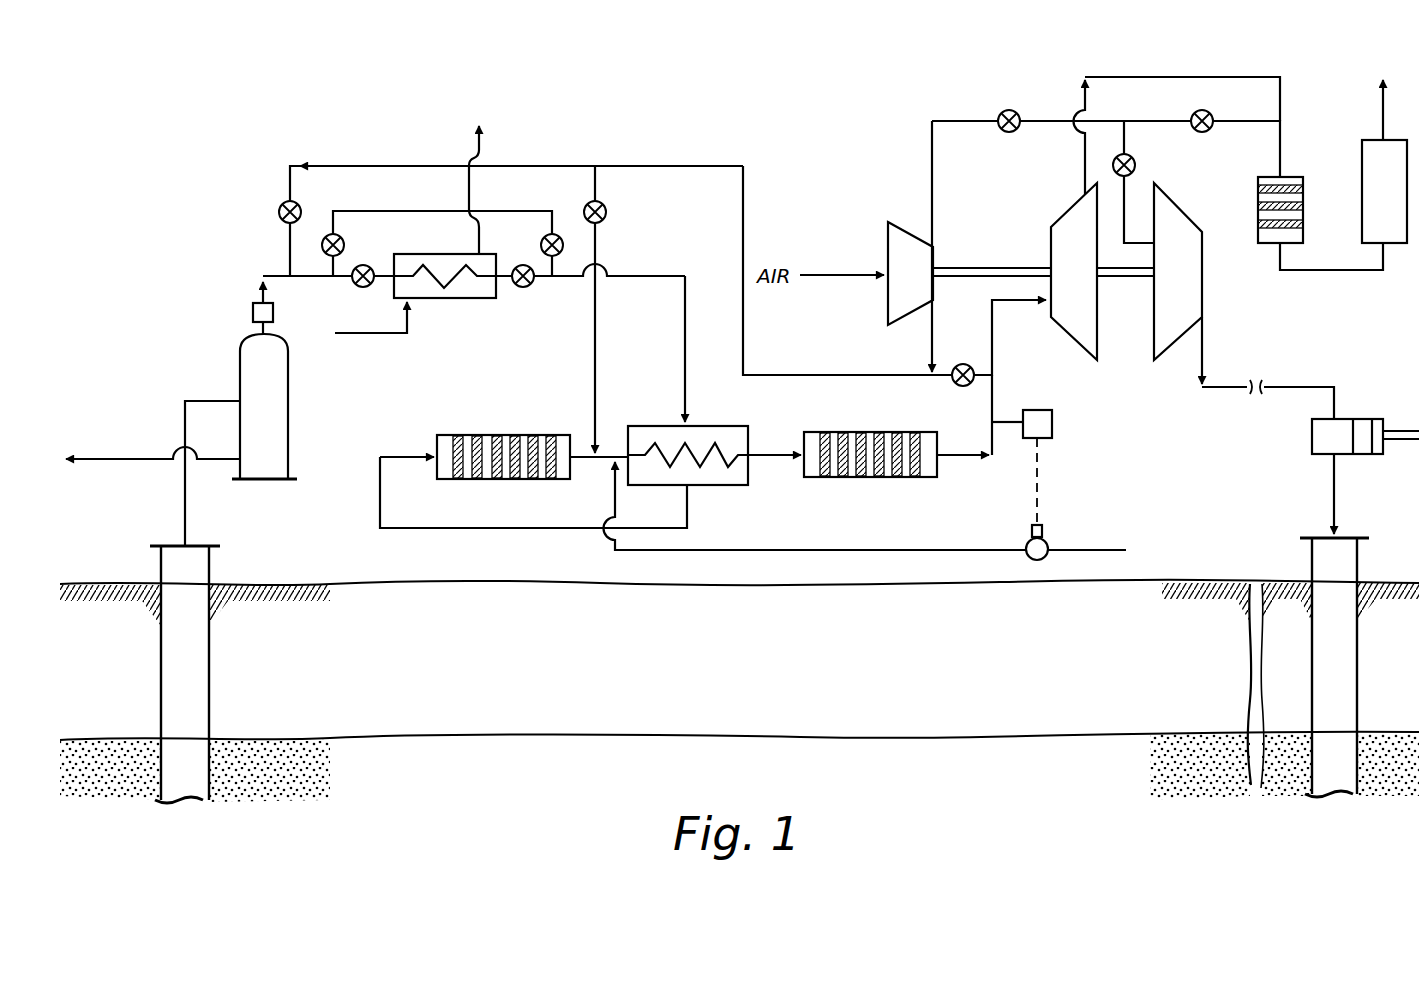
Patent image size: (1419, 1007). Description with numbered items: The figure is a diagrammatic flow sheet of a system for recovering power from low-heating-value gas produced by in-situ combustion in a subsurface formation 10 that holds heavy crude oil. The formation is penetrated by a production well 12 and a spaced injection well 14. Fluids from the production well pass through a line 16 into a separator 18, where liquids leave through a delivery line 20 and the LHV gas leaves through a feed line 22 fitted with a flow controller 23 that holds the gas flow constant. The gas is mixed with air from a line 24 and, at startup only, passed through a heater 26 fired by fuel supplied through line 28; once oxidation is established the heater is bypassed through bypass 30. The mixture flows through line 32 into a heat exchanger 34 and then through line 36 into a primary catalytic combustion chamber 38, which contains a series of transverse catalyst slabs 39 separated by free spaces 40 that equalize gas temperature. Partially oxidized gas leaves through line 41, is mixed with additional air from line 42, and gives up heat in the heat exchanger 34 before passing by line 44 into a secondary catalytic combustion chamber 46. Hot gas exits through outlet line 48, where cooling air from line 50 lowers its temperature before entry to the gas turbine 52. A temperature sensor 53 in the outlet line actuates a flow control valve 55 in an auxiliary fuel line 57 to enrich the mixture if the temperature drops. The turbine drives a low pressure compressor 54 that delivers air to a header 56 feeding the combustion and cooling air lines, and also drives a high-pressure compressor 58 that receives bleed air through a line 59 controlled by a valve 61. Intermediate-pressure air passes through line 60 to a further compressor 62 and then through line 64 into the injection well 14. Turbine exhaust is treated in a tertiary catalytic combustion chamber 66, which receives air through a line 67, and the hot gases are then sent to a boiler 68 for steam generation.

The subsurface formation 10 is at (758, 793).
The production well 12 is at (211, 668).
The injection well 14 is at (1359, 665).
The line 16 is at (183, 420).
The separator 18 is at (289, 410).
The delivery line 20 is at (160, 461).
The feed line 22 is at (261, 294).
The flow controller 23 is at (276, 308).
The line 24 is at (288, 249).
The heater 26 is at (455, 299).
The line 28 is at (393, 334).
The bypass 30 is at (425, 210).
The line 32 is at (688, 306).
The heat exchanger 34 is at (715, 425).
The line 36 is at (433, 528).
The primary catalytic combustion chamber 38 is at (440, 434).
The slabs 39 is at (496, 435).
The free spaces 40 is at (540, 435).
The line 41 is at (586, 460).
The line 42 is at (598, 342).
The line 44 is at (765, 458).
The secondary catalytic combustion chamber 46 is at (893, 478).
The outlet line 48 is at (955, 458).
The line 50 is at (985, 380).
The gas turbine 52 is at (1073, 212).
The temperature sensor 53 is at (1036, 410).
The low pressure compressor 54 is at (910, 232).
The flow control valve 55 is at (1029, 545).
The header 56 is at (805, 375).
The auxiliary fuel line 57 is at (840, 550).
The high-pressure compressor 58 is at (1181, 211).
The line 59 is at (1127, 140).
The line 60 is at (1284, 390).
The valve 61 is at (1137, 165).
The compressor 62 is at (1362, 419).
The line 64 is at (1337, 490).
The tertiary catalytic combustion chamber 66 is at (1305, 216).
The line 67 is at (1163, 120).
The boiler 68 is at (1362, 160).